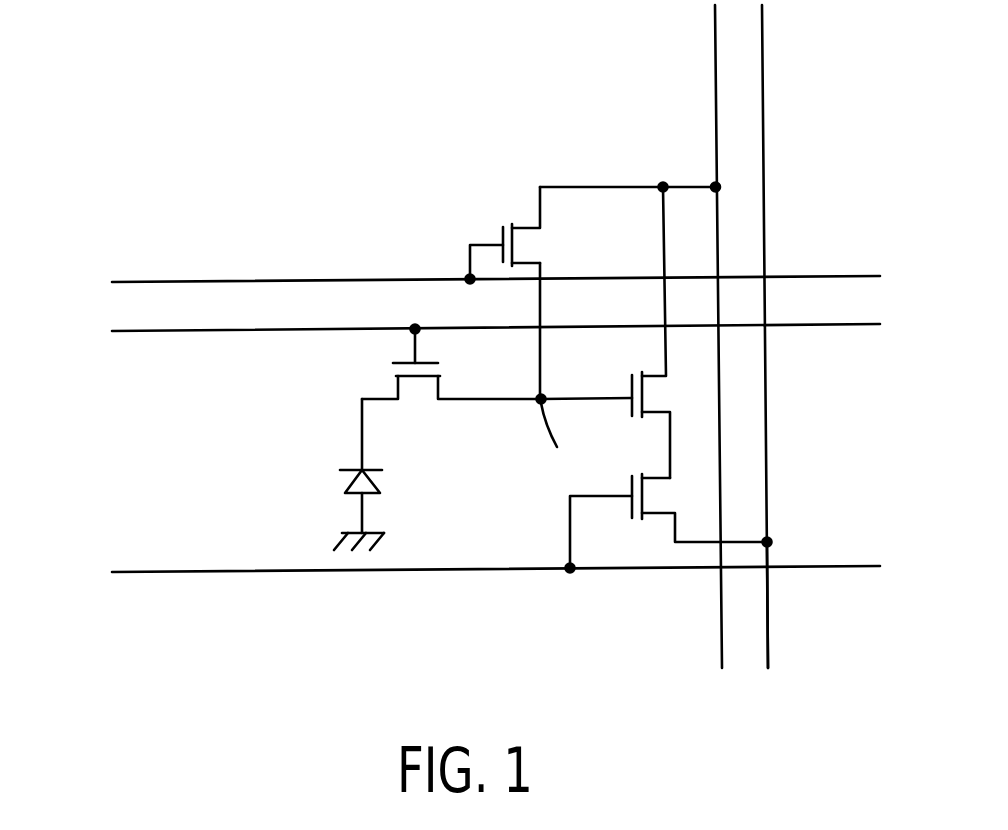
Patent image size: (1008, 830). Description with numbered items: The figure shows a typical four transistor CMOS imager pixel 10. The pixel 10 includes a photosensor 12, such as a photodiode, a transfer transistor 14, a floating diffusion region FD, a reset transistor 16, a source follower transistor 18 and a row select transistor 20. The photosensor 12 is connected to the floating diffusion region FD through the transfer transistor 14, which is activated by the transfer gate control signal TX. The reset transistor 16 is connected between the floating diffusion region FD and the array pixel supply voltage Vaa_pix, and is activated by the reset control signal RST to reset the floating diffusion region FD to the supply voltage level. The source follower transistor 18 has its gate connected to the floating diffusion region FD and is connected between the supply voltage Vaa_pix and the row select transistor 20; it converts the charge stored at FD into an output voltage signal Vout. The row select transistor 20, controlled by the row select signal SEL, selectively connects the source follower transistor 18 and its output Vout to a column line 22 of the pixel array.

The CMOS imager pixel 10 is at (182, 42).
The photosensor 12 is at (373, 482).
The transfer transistor 14 is at (392, 386).
The reset transistor 16 is at (525, 226).
The source follower transistor 18 is at (652, 377).
The row select transistor 20 is at (652, 479).
The column line 22 is at (768, 620).